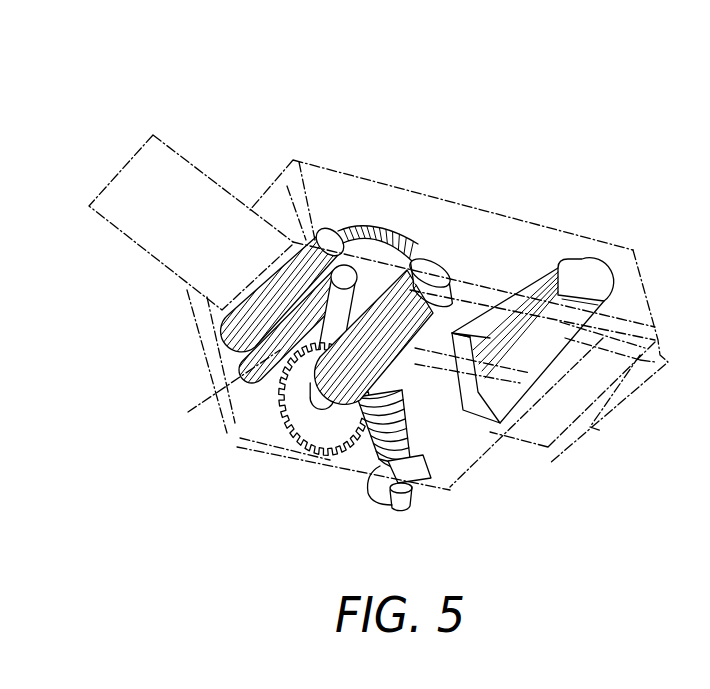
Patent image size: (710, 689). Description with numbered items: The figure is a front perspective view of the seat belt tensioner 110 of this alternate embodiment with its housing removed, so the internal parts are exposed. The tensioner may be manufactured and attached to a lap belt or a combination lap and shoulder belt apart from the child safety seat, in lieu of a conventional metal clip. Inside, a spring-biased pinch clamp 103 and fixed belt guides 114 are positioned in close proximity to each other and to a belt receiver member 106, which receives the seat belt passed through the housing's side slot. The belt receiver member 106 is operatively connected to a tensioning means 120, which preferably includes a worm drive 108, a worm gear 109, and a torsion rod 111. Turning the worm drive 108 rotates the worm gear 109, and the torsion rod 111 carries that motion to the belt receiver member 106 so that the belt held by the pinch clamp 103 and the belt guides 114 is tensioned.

The seat belt tensioner 110 is at (496, 110).
The spring-biased pinch clamp 103 is at (582, 259).
The belt receiver member 106 is at (440, 270).
The worm drive 108 is at (407, 423).
The worm gear 109 is at (303, 447).
The torsion rod 111 is at (280, 382).
The fixed belt guides 114 is at (333, 228).
The tensioning means 120 is at (338, 492).